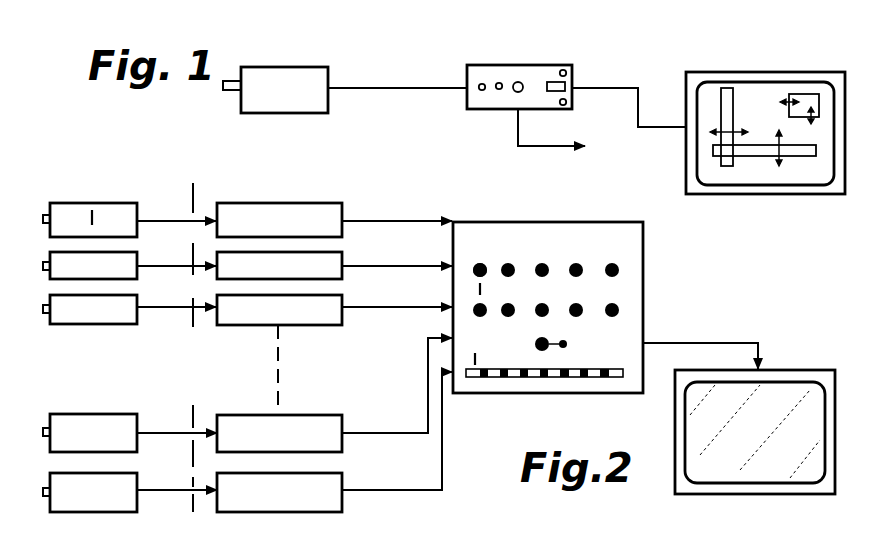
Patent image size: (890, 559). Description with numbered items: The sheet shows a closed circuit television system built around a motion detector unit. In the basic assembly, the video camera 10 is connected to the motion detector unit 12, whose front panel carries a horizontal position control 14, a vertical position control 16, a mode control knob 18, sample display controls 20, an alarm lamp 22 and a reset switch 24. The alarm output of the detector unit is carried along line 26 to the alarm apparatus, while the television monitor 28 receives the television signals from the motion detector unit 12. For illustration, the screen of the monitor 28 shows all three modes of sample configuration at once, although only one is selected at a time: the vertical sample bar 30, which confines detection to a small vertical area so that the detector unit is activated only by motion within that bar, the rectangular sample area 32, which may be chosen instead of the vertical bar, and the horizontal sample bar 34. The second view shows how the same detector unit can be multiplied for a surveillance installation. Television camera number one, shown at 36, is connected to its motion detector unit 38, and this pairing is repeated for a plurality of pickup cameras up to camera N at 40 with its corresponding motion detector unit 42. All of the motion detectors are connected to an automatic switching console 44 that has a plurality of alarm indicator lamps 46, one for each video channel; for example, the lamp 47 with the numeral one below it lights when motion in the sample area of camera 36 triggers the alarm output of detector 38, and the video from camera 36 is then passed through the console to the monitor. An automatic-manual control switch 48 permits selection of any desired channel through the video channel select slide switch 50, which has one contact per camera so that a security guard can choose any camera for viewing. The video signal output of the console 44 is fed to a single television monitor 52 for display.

In FIG. 1, the video camera 10 is at (258, 66).
In FIG. 1, the motion detector unit 12 is at (463, 62).
In FIG. 1, the horizontal position control 14 is at (478, 86).
In FIG. 1, the vertical position control 16 is at (499, 82).
In FIG. 1, the mode control knob 18 is at (520, 82).
In FIG. 1, the sample display controls 20 is at (553, 82).
In FIG. 1, the alarm lamp 22 is at (574, 71).
In FIG. 1, the reset switch 24 is at (567, 109).
In FIG. 1, the alarm output line 26 is at (517, 127).
In FIG. 1, the television monitor 28 is at (719, 71).
In FIG. 1, the vertical sample bar 30 is at (725, 110).
In FIG. 1, the rectangular sample area 32 is at (798, 95).
In FIG. 1, the horizontal sample bar 34 is at (790, 153).
In FIG. 2, the television camera number 1 36 is at (88, 213).
In FIG. 2, the motion detector unit 38 is at (243, 213).
In FIG. 2, the camera N 40 is at (73, 482).
In FIG. 2, the motion detector unit 42 is at (273, 503).
In FIG. 2, the automatic switching console 44 is at (469, 220).
In FIG. 2, the matrix of indicator lamps 46 is at (541, 252).
In FIG. 2, the alarm indicator lamp 47 is at (475, 263).
In FIG. 2, the automatic-manual control switch 48 is at (567, 343).
In FIG. 2, the video channel select slide switch 50 is at (528, 362).
In FIG. 2, the television monitor 52 is at (805, 368).